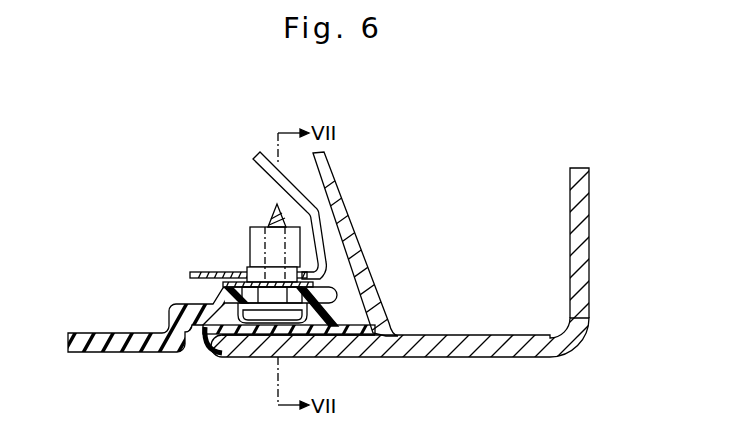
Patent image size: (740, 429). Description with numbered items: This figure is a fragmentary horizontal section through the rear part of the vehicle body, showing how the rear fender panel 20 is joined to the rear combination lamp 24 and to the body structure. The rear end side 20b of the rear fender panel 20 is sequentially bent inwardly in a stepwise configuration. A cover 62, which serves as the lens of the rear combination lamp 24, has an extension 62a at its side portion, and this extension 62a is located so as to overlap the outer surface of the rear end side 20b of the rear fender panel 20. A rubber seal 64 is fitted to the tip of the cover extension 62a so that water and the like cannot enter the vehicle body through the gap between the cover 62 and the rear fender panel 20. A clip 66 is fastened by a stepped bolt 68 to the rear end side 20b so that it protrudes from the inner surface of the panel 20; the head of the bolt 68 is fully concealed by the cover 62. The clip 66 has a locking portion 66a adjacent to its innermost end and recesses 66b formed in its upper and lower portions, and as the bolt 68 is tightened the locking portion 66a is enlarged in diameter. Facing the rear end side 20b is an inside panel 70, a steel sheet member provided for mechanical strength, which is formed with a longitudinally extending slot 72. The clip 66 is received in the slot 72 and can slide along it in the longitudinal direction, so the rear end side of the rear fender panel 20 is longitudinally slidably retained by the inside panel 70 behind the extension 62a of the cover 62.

The rear fender panel 20 is at (114, 361).
The rear end side of the rear fender panel 20b is at (222, 292).
The rear combination lamp 24 is at (598, 282).
The cover 62 is at (460, 358).
The extension 62a is at (257, 340).
The rubber seal 64 is at (201, 347).
The clip 66 is at (231, 249).
The locking portion 66a is at (250, 237).
The recesses 66b is at (277, 273).
The stepped bolt 68 is at (254, 215).
The inside panel 70 is at (266, 158).
The slot 72 is at (220, 273).